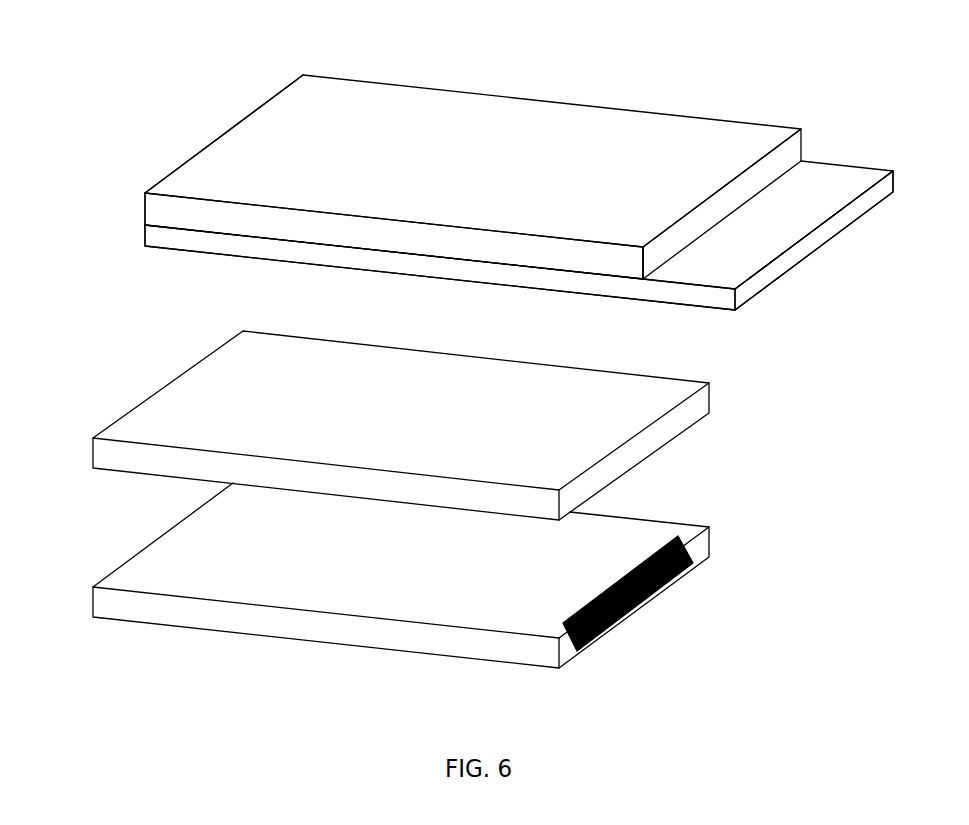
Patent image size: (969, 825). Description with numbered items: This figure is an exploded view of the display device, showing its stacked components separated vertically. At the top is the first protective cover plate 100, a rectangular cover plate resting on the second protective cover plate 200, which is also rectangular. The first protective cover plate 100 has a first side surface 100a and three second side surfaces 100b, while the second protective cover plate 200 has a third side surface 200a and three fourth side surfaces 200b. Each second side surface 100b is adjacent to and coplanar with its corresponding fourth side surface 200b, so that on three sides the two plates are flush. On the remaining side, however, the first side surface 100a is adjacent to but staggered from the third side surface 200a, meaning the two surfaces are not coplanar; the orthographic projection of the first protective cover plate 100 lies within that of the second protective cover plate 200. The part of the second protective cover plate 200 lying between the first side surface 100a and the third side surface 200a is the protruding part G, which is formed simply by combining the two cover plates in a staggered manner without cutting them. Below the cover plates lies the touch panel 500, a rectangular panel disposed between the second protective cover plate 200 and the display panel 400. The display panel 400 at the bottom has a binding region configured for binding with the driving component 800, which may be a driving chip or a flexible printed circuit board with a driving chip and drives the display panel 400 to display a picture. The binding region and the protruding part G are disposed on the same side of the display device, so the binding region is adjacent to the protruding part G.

The first protective cover plate 100 is at (563, 125).
The first side surface 100a is at (763, 163).
The second side surface 100b is at (285, 222).
The second protective cover plate 200 is at (559, 291).
The third side surface 200a is at (860, 207).
The fourth side surface 200b is at (390, 260).
The protruding part G is at (748, 243).
The touch panel 500 is at (168, 407).
The display panel 400 is at (399, 637).
The driving component 800 is at (635, 613).